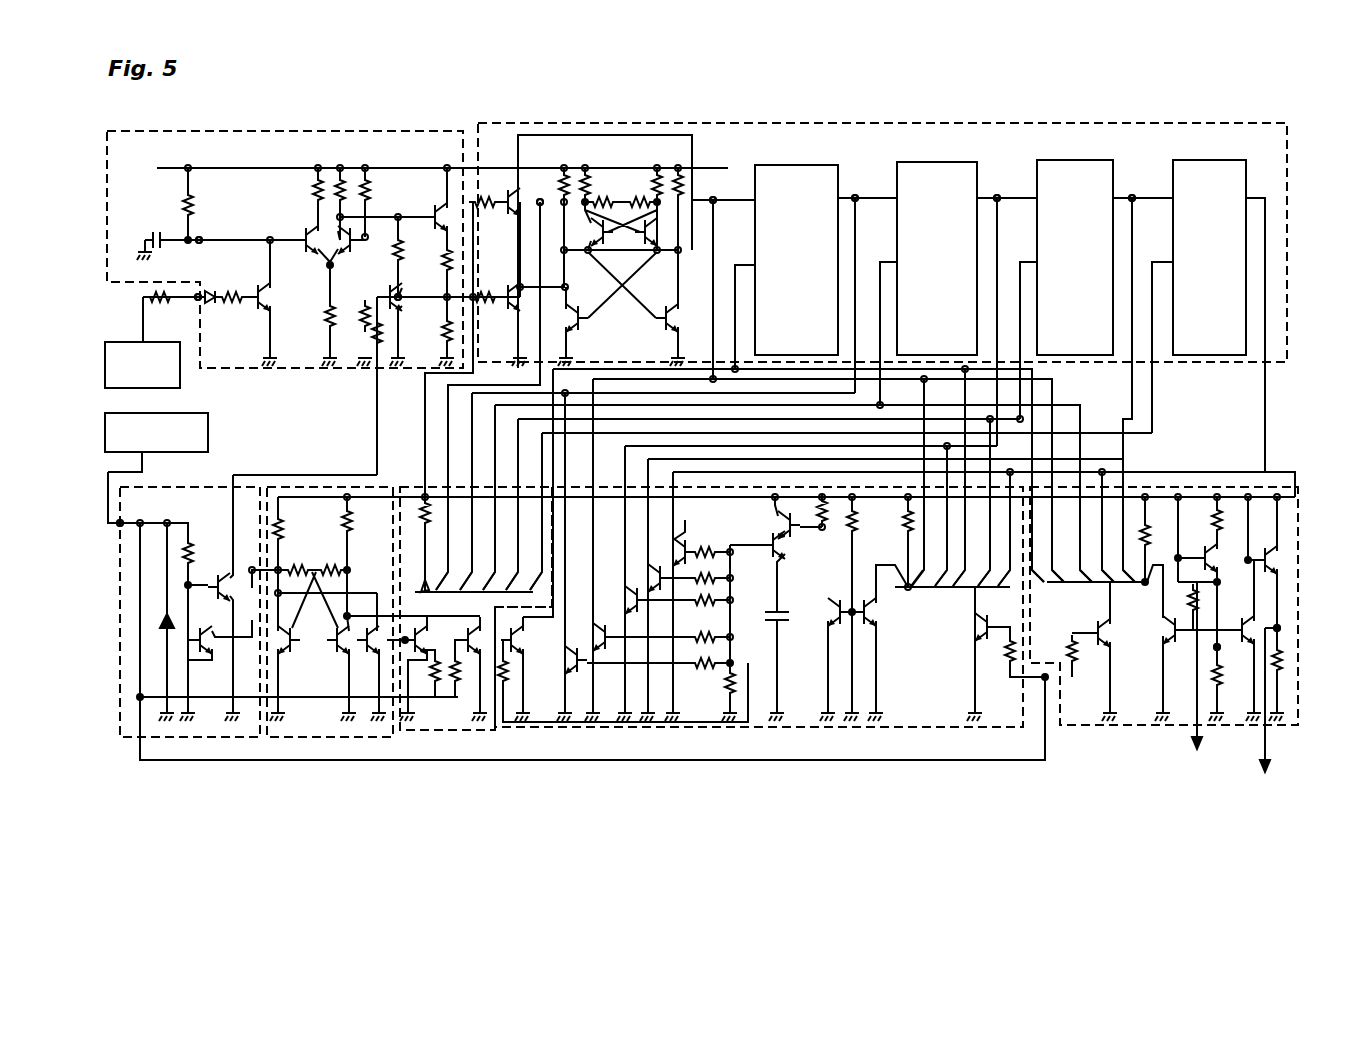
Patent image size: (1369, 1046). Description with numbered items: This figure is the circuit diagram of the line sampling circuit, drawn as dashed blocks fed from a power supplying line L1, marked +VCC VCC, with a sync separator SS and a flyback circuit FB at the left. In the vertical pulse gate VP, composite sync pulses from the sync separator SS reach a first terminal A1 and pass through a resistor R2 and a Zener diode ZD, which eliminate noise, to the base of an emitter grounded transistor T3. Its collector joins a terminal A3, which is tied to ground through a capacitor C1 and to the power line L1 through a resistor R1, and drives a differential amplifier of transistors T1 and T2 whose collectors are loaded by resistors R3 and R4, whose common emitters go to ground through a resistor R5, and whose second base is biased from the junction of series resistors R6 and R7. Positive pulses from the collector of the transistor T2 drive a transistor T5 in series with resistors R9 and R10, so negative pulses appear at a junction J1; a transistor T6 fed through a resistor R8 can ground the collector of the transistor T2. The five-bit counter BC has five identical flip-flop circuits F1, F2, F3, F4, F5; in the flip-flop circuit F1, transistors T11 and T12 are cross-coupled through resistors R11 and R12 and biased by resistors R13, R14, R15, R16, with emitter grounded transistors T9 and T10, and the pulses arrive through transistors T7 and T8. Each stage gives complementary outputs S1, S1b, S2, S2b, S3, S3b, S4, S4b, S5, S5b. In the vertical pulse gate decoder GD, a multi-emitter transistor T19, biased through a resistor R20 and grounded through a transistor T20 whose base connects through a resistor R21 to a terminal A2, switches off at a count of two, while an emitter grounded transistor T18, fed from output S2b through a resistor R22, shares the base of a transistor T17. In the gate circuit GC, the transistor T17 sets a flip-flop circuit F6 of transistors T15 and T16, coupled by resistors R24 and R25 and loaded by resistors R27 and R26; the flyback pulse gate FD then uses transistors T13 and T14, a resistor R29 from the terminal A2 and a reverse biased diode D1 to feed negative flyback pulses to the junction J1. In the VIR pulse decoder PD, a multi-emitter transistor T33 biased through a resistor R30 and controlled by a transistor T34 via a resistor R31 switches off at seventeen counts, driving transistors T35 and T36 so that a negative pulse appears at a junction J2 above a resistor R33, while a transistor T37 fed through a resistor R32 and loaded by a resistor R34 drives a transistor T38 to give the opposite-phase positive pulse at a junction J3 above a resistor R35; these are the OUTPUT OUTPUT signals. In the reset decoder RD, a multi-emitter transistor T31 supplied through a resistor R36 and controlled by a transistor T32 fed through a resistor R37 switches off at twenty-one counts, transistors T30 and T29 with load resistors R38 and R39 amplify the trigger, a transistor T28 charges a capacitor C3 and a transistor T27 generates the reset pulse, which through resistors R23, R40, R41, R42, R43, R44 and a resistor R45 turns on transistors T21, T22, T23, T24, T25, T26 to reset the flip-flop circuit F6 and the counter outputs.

The vertical pulse gate VP is at (372, 131).
The 5-bit counter BC is at (900, 123).
The flyback pulse gate FD is at (197, 737).
The gate circuit GC is at (325, 737).
The vertical pulse gate decoder GD is at (465, 732).
The reset decoder RD is at (637, 727).
The VIR pulse decoder PD is at (1097, 725).
The sync separator SS is at (180, 378).
The flyback circuit FB is at (208, 428).
The flip-flop circuit F1 is at (605, 251).
The flip-flop circuit F2 is at (785, 165).
The flip-flop circuit F3 is at (912, 162).
The flip-flop circuit F4 is at (1052, 160).
The flip-flop circuit F5 is at (1188, 160).
The flip-flop circuit F6 is at (327, 645).
The supply voltage VCC is at (1295, 472).
The power supplying line L1 is at (222, 168).
The resistor R1 is at (185, 207).
The resistor R2 is at (237, 285).
The resistor R3 is at (316, 190).
The resistor R4 is at (355, 190).
The resistor R5 is at (332, 333).
The resistor R6 is at (364, 316).
The resistor R7 is at (382, 190).
The resistor R8 is at (400, 345).
The resistor R9 is at (462, 260).
The resistor R10 is at (456, 338).
The resistor R11 is at (616, 192).
The resistor R12 is at (651, 192).
The resistor R13 is at (563, 178).
The resistor R14 is at (604, 168).
The resistor R15 is at (652, 178).
The resistor R16 is at (687, 168).
The resistor R20 is at (425, 505).
The resistor R21 is at (455, 675).
The resistor R22 is at (435, 675).
The resistor R23 is at (503, 675).
The resistor R24 is at (330, 528).
The resistor R25 is at (306, 558).
The resistor R26 is at (349, 505).
The resistor R27 is at (278, 510).
The resistor R29 is at (190, 550).
The resistor R30 is at (1145, 518).
The resistor R31 is at (1072, 638).
The resistor R32 is at (1190, 602).
The resistor R33 is at (1215, 669).
The resistor R34 is at (1218, 508).
The resistor R35 is at (1275, 680).
The resistor R36 is at (877, 523).
The resistor R37 is at (1008, 650).
The resistor R38 is at (848, 540).
The resistor R39 is at (828, 510).
The resistor R40 is at (727, 685).
The resistor R41 is at (706, 680).
The resistor R42 is at (718, 638).
The resistor R43 is at (703, 600).
The resistor R44 is at (720, 578).
The resistor R45 is at (720, 552).
The transistor T1 is at (302, 232).
The transistor T2 is at (341, 264).
The emitter grounded transistor T3 is at (262, 310).
The transistor T5 is at (449, 219).
The transistor T6 is at (402, 304).
The transistor T7 is at (512, 193).
The transistor T8 is at (498, 295).
The emitter grounded transistor T9 is at (584, 331).
The emitter grounded transistor T10 is at (663, 331).
The transistor T11 is at (614, 238).
The transistor T12 is at (651, 238).
The emitter grounded transistor T13 is at (197, 658).
The emitter grounded transistor T14 is at (220, 597).
The emitter grounded transistor T15 is at (303, 649).
The emitter grounded transistor T16 is at (340, 649).
The transistor T17 is at (375, 640).
The emitter grounded transistor T18 is at (405, 645).
The multi-emitter transistor T19 is at (448, 593).
The transistor T20 is at (471, 630).
The emitter-grounded transistor T21 is at (538, 640).
The emitter-grounded transistor T22 is at (592, 648).
The emitter-grounded transistor T23 is at (626, 596).
The emitter-grounded transistor T24 is at (653, 578).
The emitter-grounded transistor T25 is at (671, 552).
The emitter-grounded transistor T26 is at (698, 527).
The transistor T27 is at (767, 523).
The transistor T28 is at (778, 544).
The emitter-grounded transistor T29 is at (830, 635).
The emitter-grounded transistor T30 is at (866, 628).
The multi-emitter transistor T31 is at (958, 588).
The emitter-grounded transistor T32 is at (975, 628).
The multi-emitter transistor T33 is at (1128, 584).
The emitter-grounded transistor T34 is at (1092, 648).
The emitter-grounded transistor T35 is at (1170, 633).
The transistor T36 is at (1201, 547).
The emitter grounded transistor T37 is at (1238, 632).
The transistor T38 is at (1265, 550).
The first terminal A1 is at (200, 294).
The terminal A2 is at (122, 523).
The terminal A3 is at (202, 237).
The capacitor C1 is at (173, 252).
The capacitor C3 is at (791, 619).
The Zener diode ZD is at (207, 305).
The reverse biased diode D1 is at (160, 626).
The junction J1 is at (400, 297).
The junction J2 is at (1220, 649).
The junction J3 is at (1278, 628).
The output terminal S1 is at (715, 189).
The output terminal S2 is at (858, 188).
The output terminal S3 is at (1000, 187).
The output terminal S4 is at (1133, 187).
The output terminal S5 is at (1263, 236).
The output terminal S1b is at (543, 174).
The output terminal S2b is at (734, 237).
The output terminal S3b is at (876, 236).
The output terminal S4b is at (1018, 236).
The output terminal S5b is at (1156, 236).
The output terminal OUTPUT is at (1238, 689).